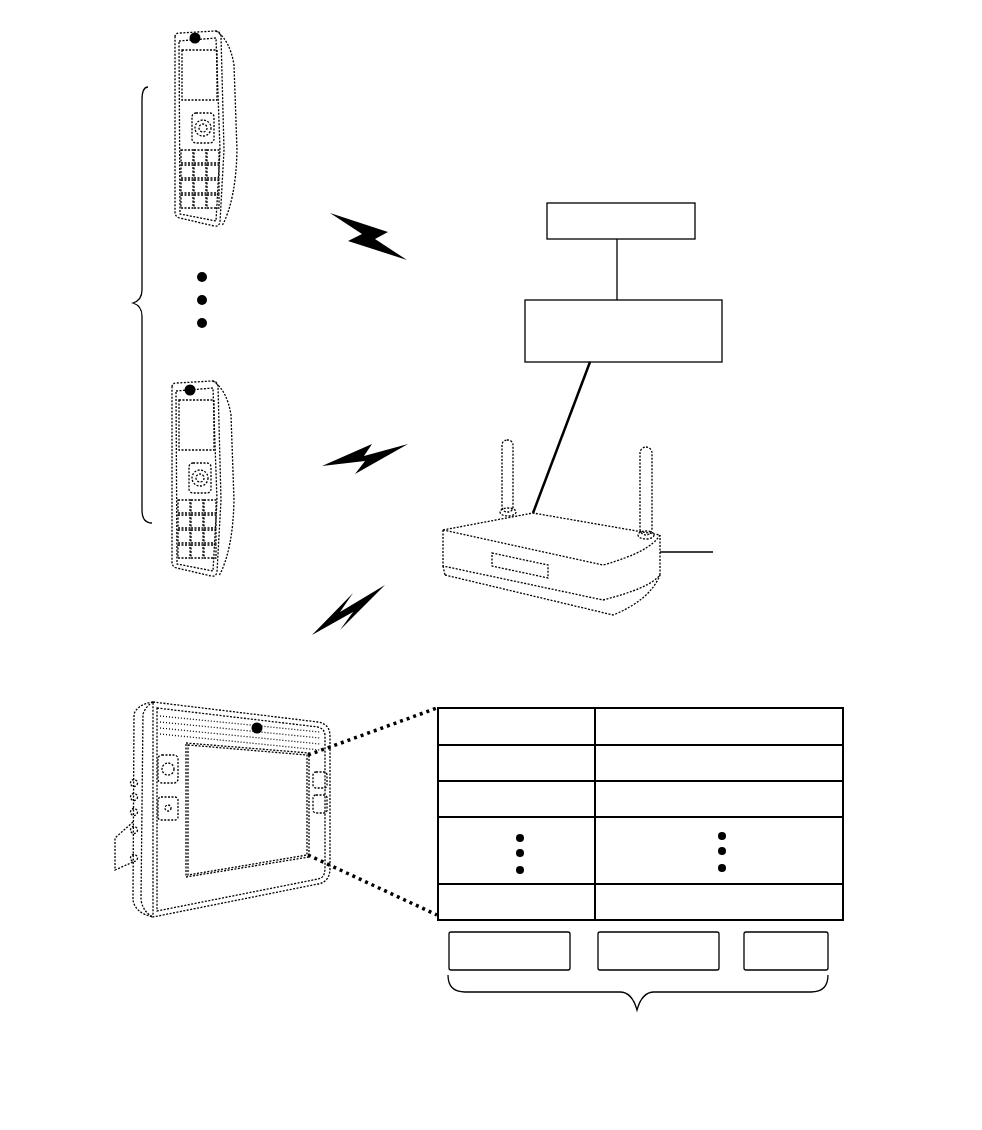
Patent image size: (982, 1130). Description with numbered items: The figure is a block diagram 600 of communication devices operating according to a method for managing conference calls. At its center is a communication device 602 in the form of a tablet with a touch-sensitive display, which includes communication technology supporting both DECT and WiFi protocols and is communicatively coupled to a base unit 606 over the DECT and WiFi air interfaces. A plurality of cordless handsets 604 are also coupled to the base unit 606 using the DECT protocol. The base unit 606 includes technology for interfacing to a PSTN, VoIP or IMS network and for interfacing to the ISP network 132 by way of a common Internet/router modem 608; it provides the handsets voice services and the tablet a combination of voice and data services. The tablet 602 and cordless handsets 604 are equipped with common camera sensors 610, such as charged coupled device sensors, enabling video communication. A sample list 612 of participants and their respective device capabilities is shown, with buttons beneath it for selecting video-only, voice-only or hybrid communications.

The block diagram 600 is at (708, 99).
The communication device 602 is at (152, 702).
The cordless handsets 604 is at (237, 147).
The base unit 606 is at (612, 617).
The Internet/router modem 608 is at (623, 331).
The camera sensors 610 is at (193, 388).
The list of participants and capabilities 612 is at (757, 708).
The ISP network 132 is at (621, 221).